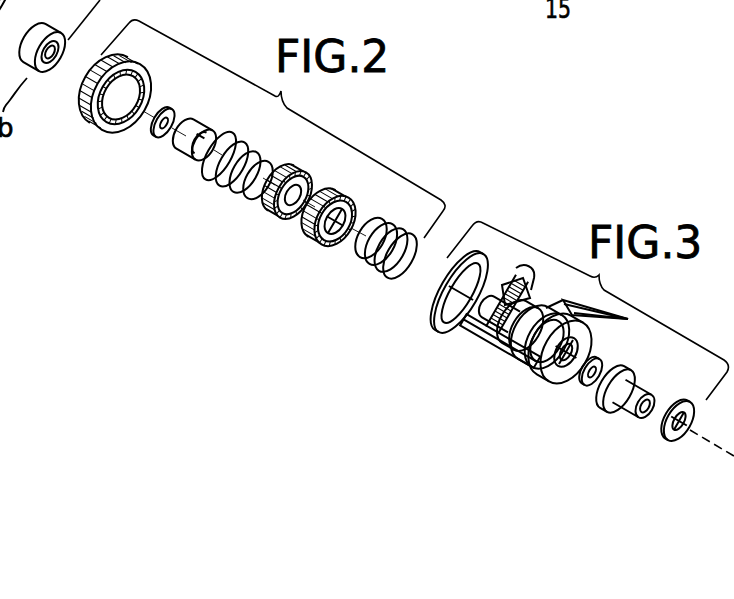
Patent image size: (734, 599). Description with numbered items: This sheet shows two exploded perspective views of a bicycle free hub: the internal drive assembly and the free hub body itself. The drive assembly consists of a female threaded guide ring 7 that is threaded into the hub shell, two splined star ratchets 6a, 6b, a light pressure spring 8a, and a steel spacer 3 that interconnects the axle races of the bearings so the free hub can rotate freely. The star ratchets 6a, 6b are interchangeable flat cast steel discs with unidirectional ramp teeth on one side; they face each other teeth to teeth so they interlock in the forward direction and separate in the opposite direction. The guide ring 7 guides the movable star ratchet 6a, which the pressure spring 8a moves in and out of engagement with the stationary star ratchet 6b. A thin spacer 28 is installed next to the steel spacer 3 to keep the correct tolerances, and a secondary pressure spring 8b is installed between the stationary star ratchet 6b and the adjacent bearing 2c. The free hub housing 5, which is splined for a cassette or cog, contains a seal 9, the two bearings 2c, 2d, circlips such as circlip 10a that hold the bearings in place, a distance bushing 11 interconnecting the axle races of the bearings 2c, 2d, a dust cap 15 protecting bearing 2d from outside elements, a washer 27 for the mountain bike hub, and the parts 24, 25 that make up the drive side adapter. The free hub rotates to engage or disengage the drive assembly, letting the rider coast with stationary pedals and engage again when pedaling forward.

In FIG. 2, the female threaded guide ring 7 is at (96, 121).
In FIG. 2, the spacer 28 is at (152, 135).
In FIG. 2, the steel spacer 3 is at (186, 152).
In FIG. 2, the pressure spring 8a is at (222, 182).
In FIG. 2, the movable star ratchet 6a is at (275, 217).
In FIG. 2, the stationary star ratchet 6b is at (312, 243).
In FIG. 2, the secondary pressure spring 8b is at (372, 265).
In FIG. 3, the sealing ring 9 is at (431, 323).
In FIG. 3, the free hub housing 5 is at (484, 345).
In FIG. 3, the dust cap 15 is at (550, 382).
In FIG. 3, the bearing 2d is at (525, 374).
In FIG. 3, the distance bushing 11 is at (505, 365).
In FIG. 3, the bearing 2c is at (510, 284).
In FIG. 3, the circlip 10a is at (616, 329).
In FIG. 3, the washer 27 is at (582, 392).
In FIG. 3, the drive side adapter component 24 is at (612, 409).
In FIG. 3, the drive side adapter component 25 is at (667, 439).